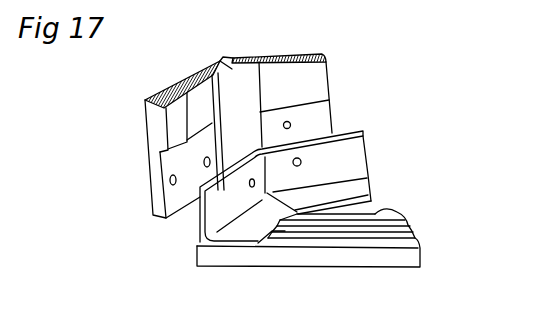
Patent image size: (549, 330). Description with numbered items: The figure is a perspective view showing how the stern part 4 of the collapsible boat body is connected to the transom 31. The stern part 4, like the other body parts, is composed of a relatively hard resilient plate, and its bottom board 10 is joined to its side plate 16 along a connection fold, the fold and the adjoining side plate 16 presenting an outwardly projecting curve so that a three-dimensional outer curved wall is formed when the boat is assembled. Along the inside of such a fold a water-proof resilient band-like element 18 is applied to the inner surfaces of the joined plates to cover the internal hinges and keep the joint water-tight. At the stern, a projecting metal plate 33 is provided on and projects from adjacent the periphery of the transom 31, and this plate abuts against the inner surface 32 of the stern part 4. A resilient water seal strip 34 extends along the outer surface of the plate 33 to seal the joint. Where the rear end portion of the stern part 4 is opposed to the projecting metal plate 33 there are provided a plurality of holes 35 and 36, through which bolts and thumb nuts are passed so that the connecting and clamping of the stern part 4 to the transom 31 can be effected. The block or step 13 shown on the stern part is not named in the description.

The stern part 4 is at (307, 50).
The boat bottom board 10 is at (308, 79).
The block 13 is at (195, 100).
The boat side plate 16 is at (223, 55).
The water-proof resilient band-like element 18 is at (245, 90).
The transom 31 is at (363, 258).
The inner surface 32 is at (181, 210).
The projecting metal plate 33 is at (240, 208).
The resilient water seal strip 34 is at (199, 226).
The holes 35 is at (291, 124).
The holes 36 is at (297, 167).